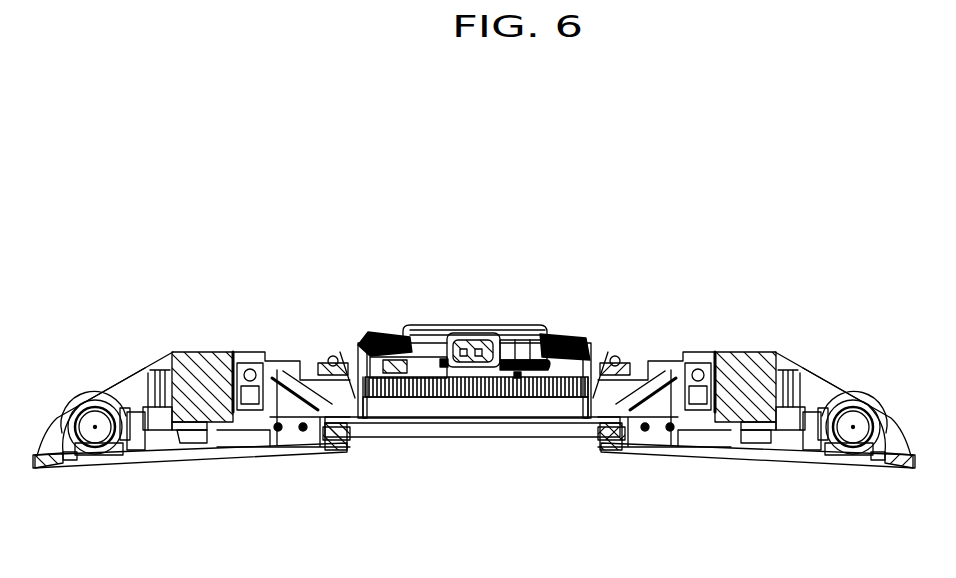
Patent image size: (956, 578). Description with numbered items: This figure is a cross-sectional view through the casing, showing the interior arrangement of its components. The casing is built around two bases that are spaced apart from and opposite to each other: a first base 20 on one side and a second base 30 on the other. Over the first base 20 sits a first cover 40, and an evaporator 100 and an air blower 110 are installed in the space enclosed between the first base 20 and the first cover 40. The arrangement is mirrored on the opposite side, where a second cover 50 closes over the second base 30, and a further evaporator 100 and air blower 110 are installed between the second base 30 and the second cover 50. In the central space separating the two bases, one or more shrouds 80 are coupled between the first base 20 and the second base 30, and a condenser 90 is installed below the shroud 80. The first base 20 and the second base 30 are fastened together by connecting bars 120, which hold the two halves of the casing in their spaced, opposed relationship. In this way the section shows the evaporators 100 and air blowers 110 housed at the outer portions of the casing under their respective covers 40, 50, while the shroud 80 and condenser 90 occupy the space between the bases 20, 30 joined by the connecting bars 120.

The first base 20 is at (780, 463).
The second base 30 is at (210, 460).
The first cover 40 is at (745, 349).
The second cover 50 is at (268, 351).
The shroud 80 is at (478, 321).
The condenser 90 is at (467, 398).
The evaporator 100 is at (204, 369).
The air blower 110 is at (116, 396).
The connecting bar 120 is at (528, 348).